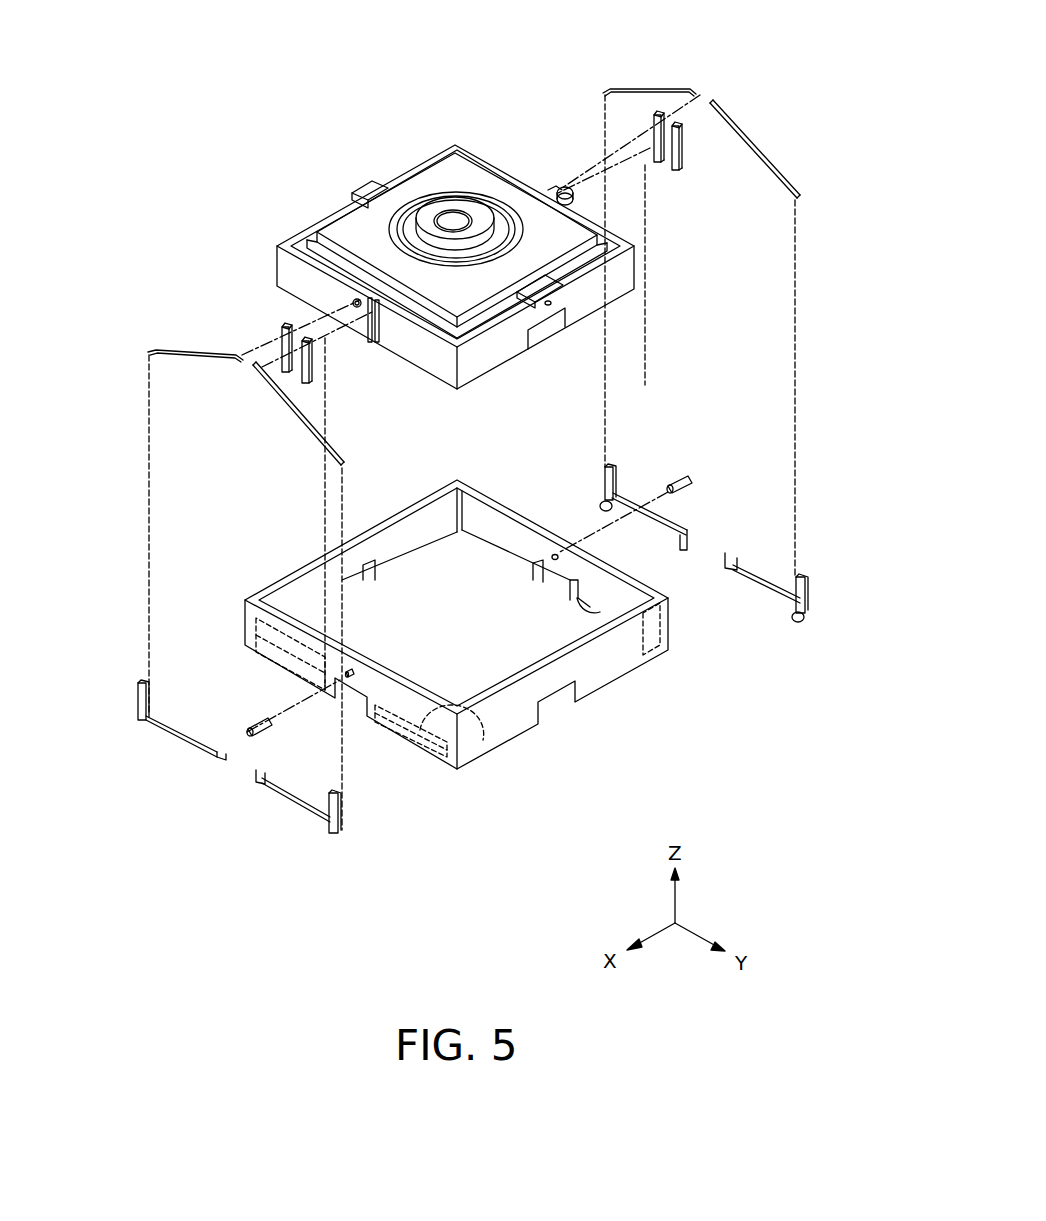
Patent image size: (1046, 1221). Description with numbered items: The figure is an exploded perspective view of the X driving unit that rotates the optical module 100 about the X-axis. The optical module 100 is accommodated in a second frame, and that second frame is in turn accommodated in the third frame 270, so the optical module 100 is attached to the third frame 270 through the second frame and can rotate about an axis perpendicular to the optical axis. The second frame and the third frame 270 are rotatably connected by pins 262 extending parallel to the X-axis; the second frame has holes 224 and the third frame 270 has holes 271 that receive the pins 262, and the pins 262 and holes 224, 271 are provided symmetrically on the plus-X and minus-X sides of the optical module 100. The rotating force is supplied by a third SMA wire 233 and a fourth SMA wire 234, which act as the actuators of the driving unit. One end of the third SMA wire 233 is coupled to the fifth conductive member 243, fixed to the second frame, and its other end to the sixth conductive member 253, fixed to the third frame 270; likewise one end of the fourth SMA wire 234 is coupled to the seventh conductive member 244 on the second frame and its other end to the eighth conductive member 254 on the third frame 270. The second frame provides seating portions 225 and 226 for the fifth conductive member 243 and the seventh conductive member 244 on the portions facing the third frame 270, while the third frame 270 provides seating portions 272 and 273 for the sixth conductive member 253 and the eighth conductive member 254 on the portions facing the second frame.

The optical module 100 is at (472, 153).
The hole 224 is at (558, 190).
The seating portion 225 is at (541, 190).
The seating portion 226 is at (568, 197).
The third SMA wire 233 is at (627, 88).
The fourth SMA wire 234 is at (753, 148).
The fifth conductive member 243 is at (660, 110).
The seventh conductive member 244 is at (678, 122).
The sixth conductive member 253 is at (177, 736).
The eighth conductive member 254 is at (288, 798).
The pin 262 is at (248, 722).
The third frame 270 is at (613, 657).
The hole 271 is at (553, 554).
The seating portion 272 is at (308, 618).
The seating portion 273 is at (580, 598).